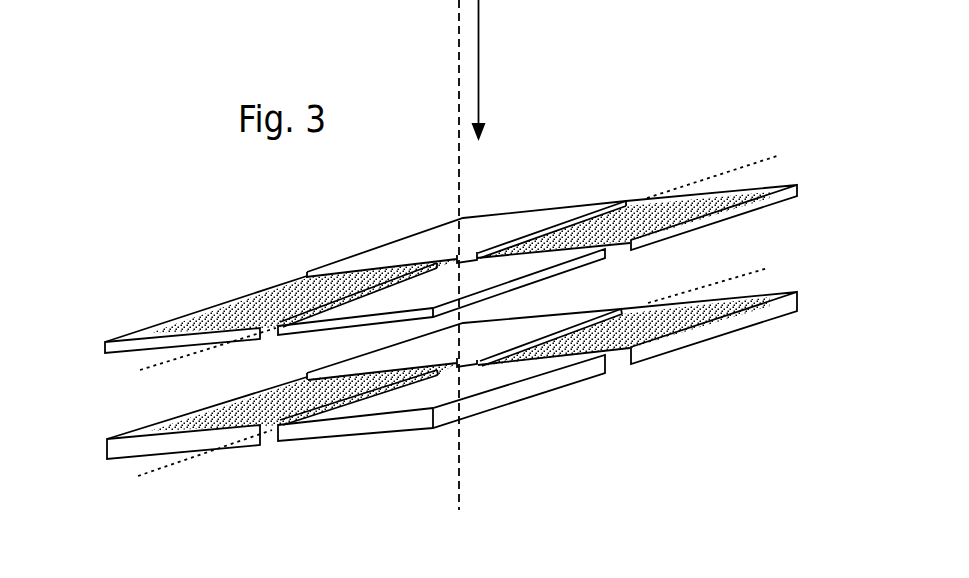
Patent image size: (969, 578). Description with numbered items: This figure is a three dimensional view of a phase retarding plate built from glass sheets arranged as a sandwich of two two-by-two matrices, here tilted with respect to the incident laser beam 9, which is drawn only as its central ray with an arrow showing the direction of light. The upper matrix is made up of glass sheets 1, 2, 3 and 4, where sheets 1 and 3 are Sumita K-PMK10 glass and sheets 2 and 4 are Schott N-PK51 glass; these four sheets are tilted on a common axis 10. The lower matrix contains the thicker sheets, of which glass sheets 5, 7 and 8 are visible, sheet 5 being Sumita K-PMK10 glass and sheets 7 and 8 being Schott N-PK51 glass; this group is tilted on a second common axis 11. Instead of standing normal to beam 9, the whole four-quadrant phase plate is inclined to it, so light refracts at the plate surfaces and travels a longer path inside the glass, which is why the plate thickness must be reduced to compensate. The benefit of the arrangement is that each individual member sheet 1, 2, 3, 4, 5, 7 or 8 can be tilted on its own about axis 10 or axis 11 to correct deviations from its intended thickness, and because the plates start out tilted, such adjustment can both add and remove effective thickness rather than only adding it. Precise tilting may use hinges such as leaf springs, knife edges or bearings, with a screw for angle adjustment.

The glass sheet 1 is at (523, 208).
The glass sheet 2 is at (792, 200).
The glass sheet 3 is at (575, 268).
The glass sheet 4 is at (200, 306).
The glass sheet 5 is at (105, 443).
The glass sheet 7 is at (695, 347).
The glass sheet 8 is at (502, 412).
The laser beam 9 is at (455, 78).
The common axis 10 is at (741, 166).
The common axis 11 is at (767, 268).